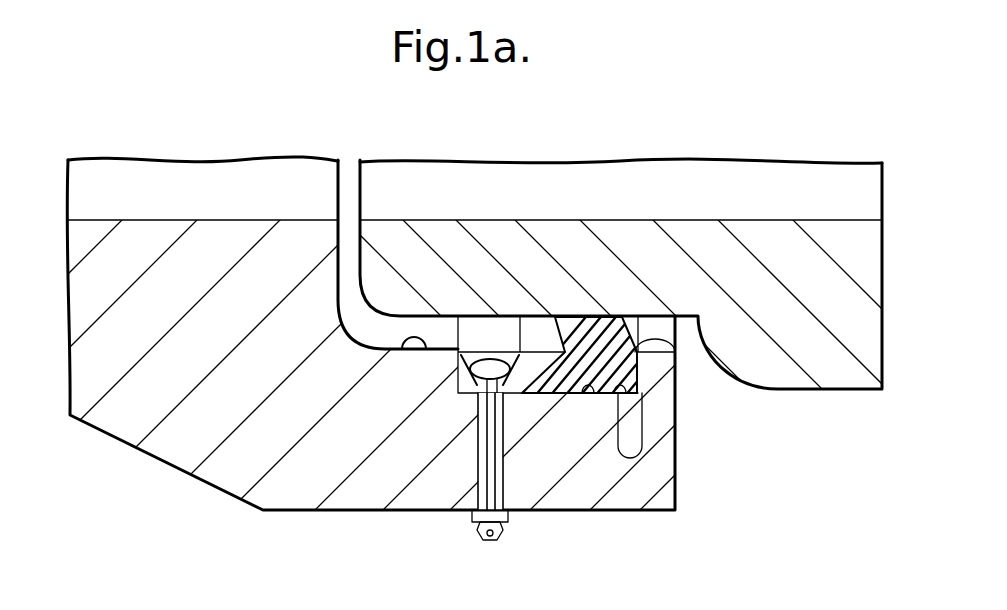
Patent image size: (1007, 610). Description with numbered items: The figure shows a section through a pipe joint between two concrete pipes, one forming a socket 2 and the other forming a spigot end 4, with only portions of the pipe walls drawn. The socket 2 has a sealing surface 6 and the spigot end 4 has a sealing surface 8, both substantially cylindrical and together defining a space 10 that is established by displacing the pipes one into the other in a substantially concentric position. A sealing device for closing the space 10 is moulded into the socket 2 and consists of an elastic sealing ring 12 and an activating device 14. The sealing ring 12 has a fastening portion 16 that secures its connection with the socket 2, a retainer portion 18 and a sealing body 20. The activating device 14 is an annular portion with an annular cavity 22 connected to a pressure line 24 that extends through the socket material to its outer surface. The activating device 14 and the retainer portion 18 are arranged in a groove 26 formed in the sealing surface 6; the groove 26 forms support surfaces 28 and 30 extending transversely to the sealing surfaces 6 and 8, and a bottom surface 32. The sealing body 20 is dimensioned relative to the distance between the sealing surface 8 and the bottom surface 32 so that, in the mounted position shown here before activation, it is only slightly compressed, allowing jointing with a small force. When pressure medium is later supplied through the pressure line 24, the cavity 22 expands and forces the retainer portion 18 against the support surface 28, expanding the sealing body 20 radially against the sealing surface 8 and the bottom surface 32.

The socket 2 is at (183, 432).
The spigot end 4 is at (617, 230).
The sealing surface 6 is at (405, 354).
The sealing surface 8 is at (505, 317).
The space 10 is at (600, 357).
The sealing ring 12 is at (675, 433).
The activating device 14 is at (473, 342).
The fastening portion 16 is at (674, 475).
The retainer portion 18 is at (535, 335).
The sealing body 20 is at (630, 318).
The annular cavity 22 is at (475, 383).
The pressure line 24 is at (493, 472).
The groove 26 is at (635, 347).
The support surface 28 is at (675, 345).
The support surface 30 is at (458, 367).
The bottom surface 32 is at (630, 452).